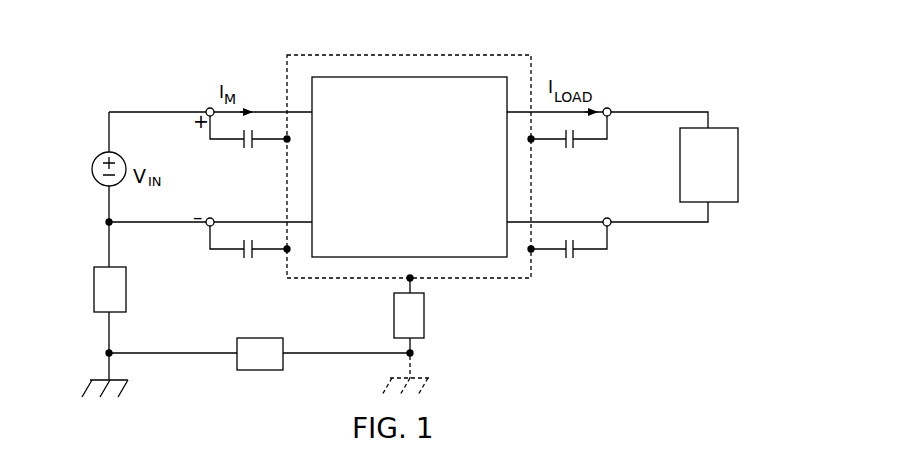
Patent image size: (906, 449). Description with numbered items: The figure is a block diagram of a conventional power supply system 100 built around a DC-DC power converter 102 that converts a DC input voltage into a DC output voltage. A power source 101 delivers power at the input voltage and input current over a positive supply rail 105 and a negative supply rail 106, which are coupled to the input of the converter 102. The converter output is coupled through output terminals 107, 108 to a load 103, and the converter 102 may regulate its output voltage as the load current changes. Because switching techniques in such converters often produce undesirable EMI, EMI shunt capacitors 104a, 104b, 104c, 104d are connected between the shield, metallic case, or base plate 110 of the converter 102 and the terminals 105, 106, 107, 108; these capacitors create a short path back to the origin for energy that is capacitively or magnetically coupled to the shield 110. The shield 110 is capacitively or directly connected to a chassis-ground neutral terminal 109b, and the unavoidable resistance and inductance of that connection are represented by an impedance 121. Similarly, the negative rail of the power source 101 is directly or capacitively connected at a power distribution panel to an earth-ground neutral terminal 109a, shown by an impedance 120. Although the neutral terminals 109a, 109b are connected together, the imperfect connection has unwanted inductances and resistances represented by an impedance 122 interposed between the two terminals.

The power supply system 100 is at (148, 48).
The power source 101 is at (93, 170).
The DC-DC power converter 102 is at (409, 167).
The load 103 is at (713, 128).
The EMI shunt capacitor 104a is at (247, 150).
The EMI shunt capacitor 104b is at (247, 260).
The EMI shunt capacitor 104c is at (572, 150).
The EMI shunt capacitor 104d is at (572, 260).
The positive supply rail 105 is at (208, 107).
The negative supply rail 106 is at (206, 226).
The output terminal 107 is at (611, 106).
The output terminal 108 is at (611, 226).
The neutral terminal 109a is at (106, 380).
The neutral terminal 109b is at (425, 372).
The shield 110 is at (340, 55).
The impedance 120 is at (104, 266).
The impedance 121 is at (424, 313).
The impedance 122 is at (265, 338).